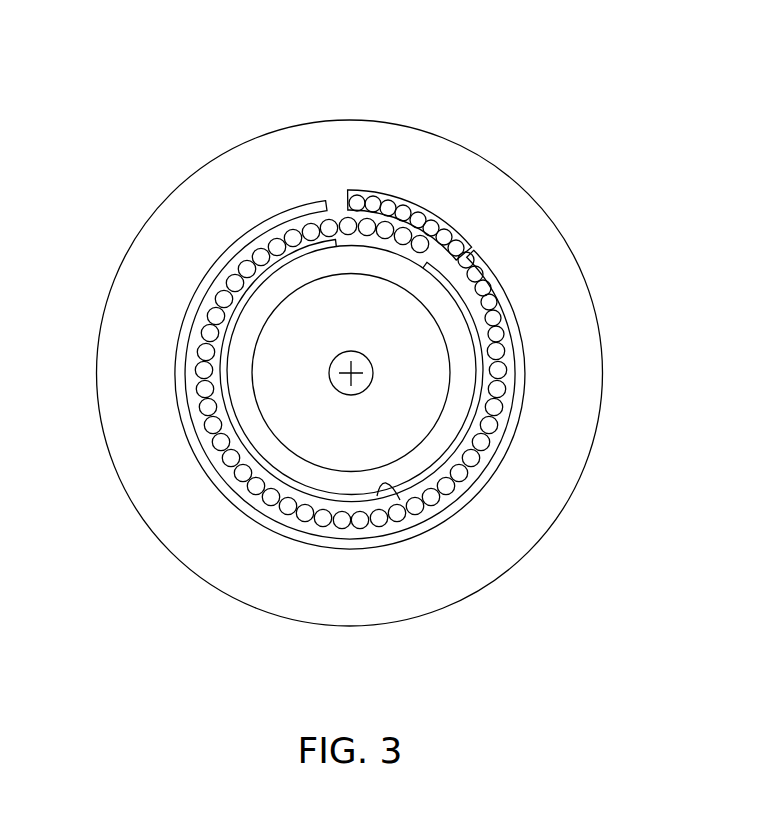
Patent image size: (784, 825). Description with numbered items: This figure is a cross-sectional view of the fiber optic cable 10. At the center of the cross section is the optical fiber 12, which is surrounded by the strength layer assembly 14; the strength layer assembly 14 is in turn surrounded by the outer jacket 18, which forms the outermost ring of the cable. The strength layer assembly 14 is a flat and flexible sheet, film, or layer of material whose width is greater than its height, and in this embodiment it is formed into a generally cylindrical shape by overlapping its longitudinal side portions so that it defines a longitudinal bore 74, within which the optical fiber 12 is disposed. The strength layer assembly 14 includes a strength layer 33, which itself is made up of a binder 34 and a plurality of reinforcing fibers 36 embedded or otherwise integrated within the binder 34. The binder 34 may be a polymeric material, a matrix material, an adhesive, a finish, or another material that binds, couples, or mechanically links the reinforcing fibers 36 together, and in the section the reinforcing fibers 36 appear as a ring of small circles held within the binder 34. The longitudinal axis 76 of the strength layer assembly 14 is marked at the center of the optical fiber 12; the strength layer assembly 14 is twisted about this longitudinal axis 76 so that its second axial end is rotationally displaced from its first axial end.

The fiber optic cable 10 is at (82, 230).
The optical fiber 12 is at (476, 398).
The strength layer assembly 14 is at (481, 506).
The outer jacket 18 is at (243, 142).
The strength layer 33 is at (281, 519).
The binder 34 is at (233, 486).
The reinforcing fibers 36 is at (428, 212).
The longitudinal bore 74 is at (377, 496).
The longitudinal axis 76 is at (361, 364).